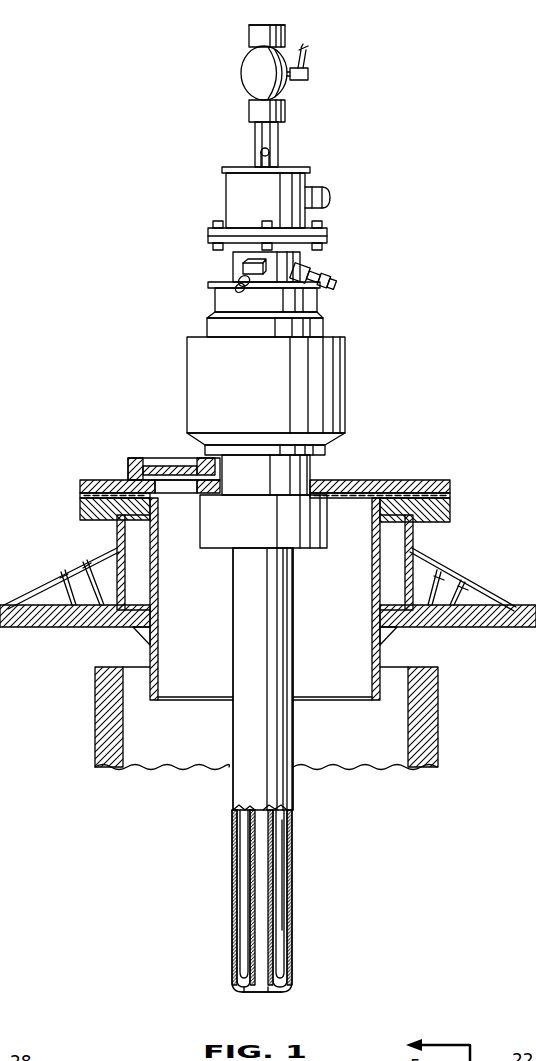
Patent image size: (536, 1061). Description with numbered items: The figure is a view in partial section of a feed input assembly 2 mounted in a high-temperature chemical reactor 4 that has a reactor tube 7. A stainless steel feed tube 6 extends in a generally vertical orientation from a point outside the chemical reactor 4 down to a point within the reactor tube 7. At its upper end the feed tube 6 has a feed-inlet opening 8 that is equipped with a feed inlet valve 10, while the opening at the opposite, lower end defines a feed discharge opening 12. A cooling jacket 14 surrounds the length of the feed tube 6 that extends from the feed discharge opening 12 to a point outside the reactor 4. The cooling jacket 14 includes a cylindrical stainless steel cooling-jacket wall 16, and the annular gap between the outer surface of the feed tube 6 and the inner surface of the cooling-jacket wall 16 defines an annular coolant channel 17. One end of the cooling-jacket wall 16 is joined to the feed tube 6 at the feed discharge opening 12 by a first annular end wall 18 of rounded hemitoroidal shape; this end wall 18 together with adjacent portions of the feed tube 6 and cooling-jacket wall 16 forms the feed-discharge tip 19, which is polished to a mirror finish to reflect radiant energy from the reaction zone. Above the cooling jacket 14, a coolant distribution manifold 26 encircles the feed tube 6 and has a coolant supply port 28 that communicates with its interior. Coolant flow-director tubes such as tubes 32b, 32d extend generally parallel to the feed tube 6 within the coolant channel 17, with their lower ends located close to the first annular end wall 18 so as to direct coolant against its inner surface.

The feed input assembly 2 is at (225, 135).
The high-temperature chemical reactor 4 is at (482, 573).
The feed tube 6 is at (280, 128).
The reactor tube 7 is at (447, 687).
The feed-inlet opening 8 is at (272, 25).
The feed inlet valve 10 is at (240, 77).
The feed discharge opening 12 is at (268, 997).
The cooling jacket 14 is at (295, 795).
The cooling-jacket wall 16 is at (295, 822).
The annular coolant channel 17 is at (282, 930).
The first annular end wall 18 is at (246, 997).
The feed-discharge tip 19 is at (238, 994).
The coolant distribution manifold 26 is at (200, 190).
The coolant supply port 28 is at (330, 196).
The coolant flow-director tube 32b is at (246, 868).
The coolant flow-director tube 32d is at (284, 868).